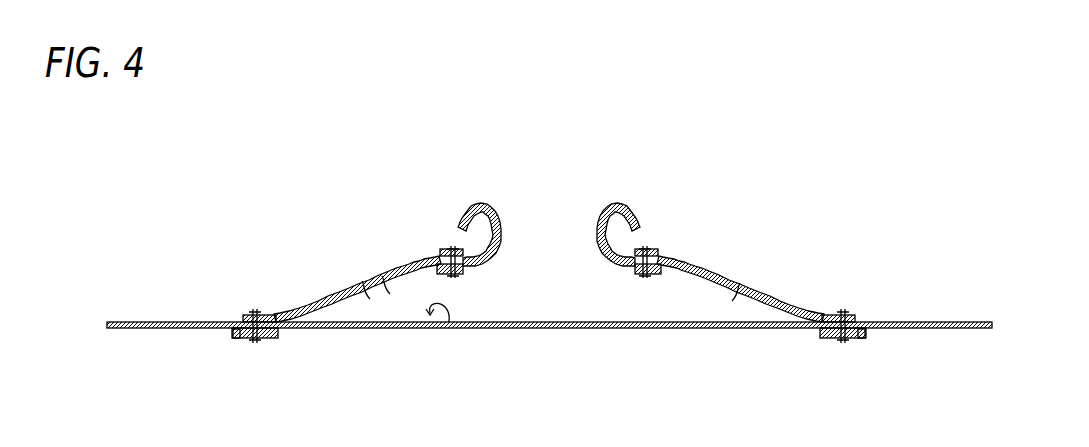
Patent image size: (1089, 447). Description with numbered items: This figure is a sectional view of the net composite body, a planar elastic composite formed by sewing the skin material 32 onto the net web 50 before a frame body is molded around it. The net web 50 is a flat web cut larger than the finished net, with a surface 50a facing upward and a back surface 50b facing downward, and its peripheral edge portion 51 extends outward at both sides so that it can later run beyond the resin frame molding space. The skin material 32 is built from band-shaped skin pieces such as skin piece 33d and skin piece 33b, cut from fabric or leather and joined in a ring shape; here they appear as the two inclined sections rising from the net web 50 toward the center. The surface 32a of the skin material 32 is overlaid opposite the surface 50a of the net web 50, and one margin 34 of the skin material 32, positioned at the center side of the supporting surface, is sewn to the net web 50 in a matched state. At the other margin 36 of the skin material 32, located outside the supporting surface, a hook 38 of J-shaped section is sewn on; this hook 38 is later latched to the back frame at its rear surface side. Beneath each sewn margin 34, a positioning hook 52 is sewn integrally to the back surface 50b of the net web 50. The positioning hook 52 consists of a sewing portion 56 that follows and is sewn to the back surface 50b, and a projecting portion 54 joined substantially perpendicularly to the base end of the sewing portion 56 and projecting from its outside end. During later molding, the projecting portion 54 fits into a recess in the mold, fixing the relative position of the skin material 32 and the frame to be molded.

The skin material 32 is at (404, 259).
The surface of the skin material 32a is at (372, 290).
The skin piece 33d is at (316, 307).
The skin piece 33b is at (713, 283).
The margin 34 is at (251, 312).
The margin 36 is at (450, 247).
The hook 38 is at (492, 208).
The net web 50 is at (585, 330).
The surface of the net web 50a is at (450, 329).
The back surface of the net web 50b is at (400, 330).
The peripheral edge portion 51 is at (107, 325).
The positioning hook 52 is at (232, 336).
The projecting portion 54 is at (236, 340).
The sewing portion 56 is at (269, 338).